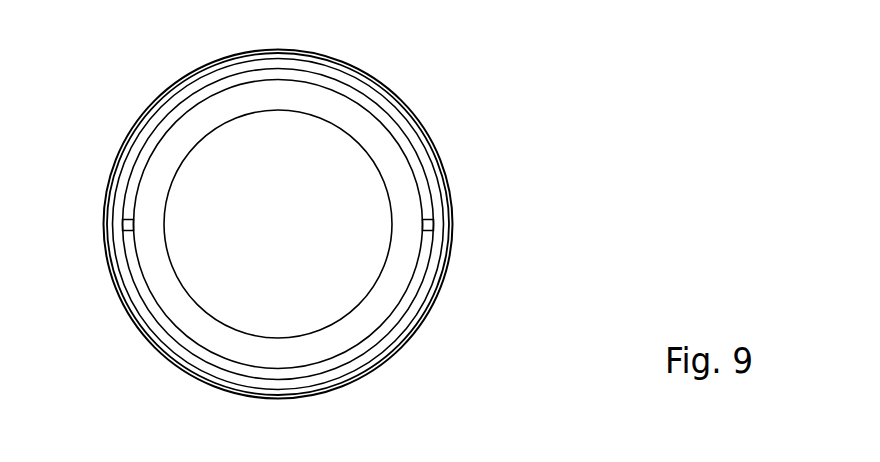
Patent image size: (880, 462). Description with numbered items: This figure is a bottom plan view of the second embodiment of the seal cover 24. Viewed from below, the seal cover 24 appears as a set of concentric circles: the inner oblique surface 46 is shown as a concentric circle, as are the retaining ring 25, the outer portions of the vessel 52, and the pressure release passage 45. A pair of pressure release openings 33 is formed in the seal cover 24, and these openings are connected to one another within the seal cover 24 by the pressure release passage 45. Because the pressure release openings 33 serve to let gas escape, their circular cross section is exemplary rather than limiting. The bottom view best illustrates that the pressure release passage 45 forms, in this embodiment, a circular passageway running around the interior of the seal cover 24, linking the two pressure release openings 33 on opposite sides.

The seal cover 24 is at (132, 91).
The retaining ring 25 is at (445, 158).
The pressure release openings 33 is at (122, 225).
The pressure release passage 45 is at (420, 280).
The inner oblique surface 46 is at (387, 293).
The vessel 52 is at (397, 112).